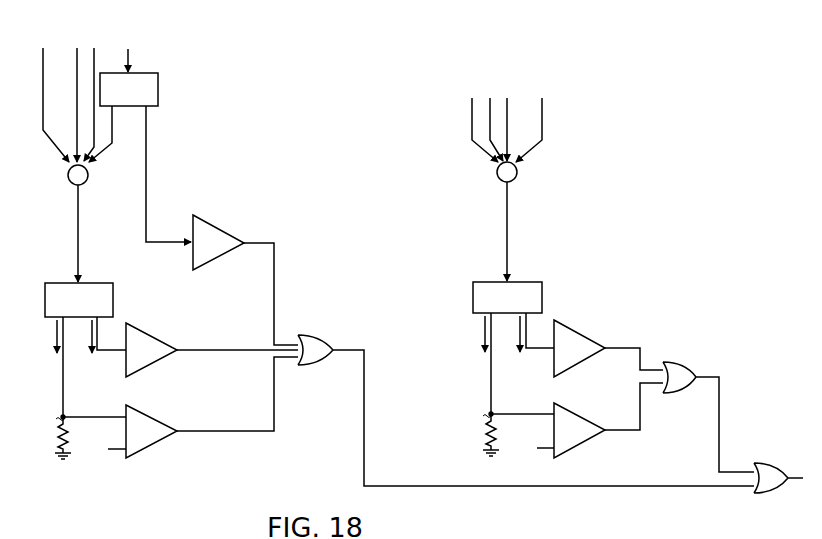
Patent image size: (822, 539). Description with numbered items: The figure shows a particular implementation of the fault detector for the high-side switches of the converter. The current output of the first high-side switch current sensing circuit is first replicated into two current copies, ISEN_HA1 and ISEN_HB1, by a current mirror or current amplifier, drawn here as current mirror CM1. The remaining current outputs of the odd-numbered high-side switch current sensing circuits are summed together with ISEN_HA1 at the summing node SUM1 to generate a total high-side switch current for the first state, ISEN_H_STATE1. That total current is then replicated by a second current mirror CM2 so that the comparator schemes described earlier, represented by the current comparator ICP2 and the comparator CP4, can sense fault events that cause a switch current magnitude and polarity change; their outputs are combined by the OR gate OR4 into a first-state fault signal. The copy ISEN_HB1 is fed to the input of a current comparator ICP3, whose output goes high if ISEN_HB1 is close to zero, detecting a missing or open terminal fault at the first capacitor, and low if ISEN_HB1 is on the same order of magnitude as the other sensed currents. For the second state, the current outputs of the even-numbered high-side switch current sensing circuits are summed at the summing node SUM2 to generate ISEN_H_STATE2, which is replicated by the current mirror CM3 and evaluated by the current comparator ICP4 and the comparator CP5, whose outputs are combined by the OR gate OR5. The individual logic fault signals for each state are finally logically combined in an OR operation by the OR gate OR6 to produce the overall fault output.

The first summing node (Σ) of high-side sense currents SUM1 is at (73, 116).
The current mirror 1 CM1 is at (145, 133).
The current mirror 2 CM2 is at (75, 301).
The current comparator ICP3 is at (245, 280).
The current comparator ICP2 is at (212, 350).
The voltage comparator CP4 with VSEN4 sense resistor CP4 is at (159, 408).
The OR gate OR4 producing FLT_H_STATE1 OR4 is at (526, 410).
The second summing node (Σ) of high-side sense currents SUM2 is at (502, 140).
The current mirror 3 CM3 is at (502, 298).
The current comparator ICP4 is at (608, 348).
The voltage comparator CP5 with VSEN5 sense resistor CP5 is at (554, 420).
The OR gate OR5 producing FLT_H_STATE2 OR5 is at (708, 417).
The OR gate OR6 producing FLT OR6 is at (780, 478).